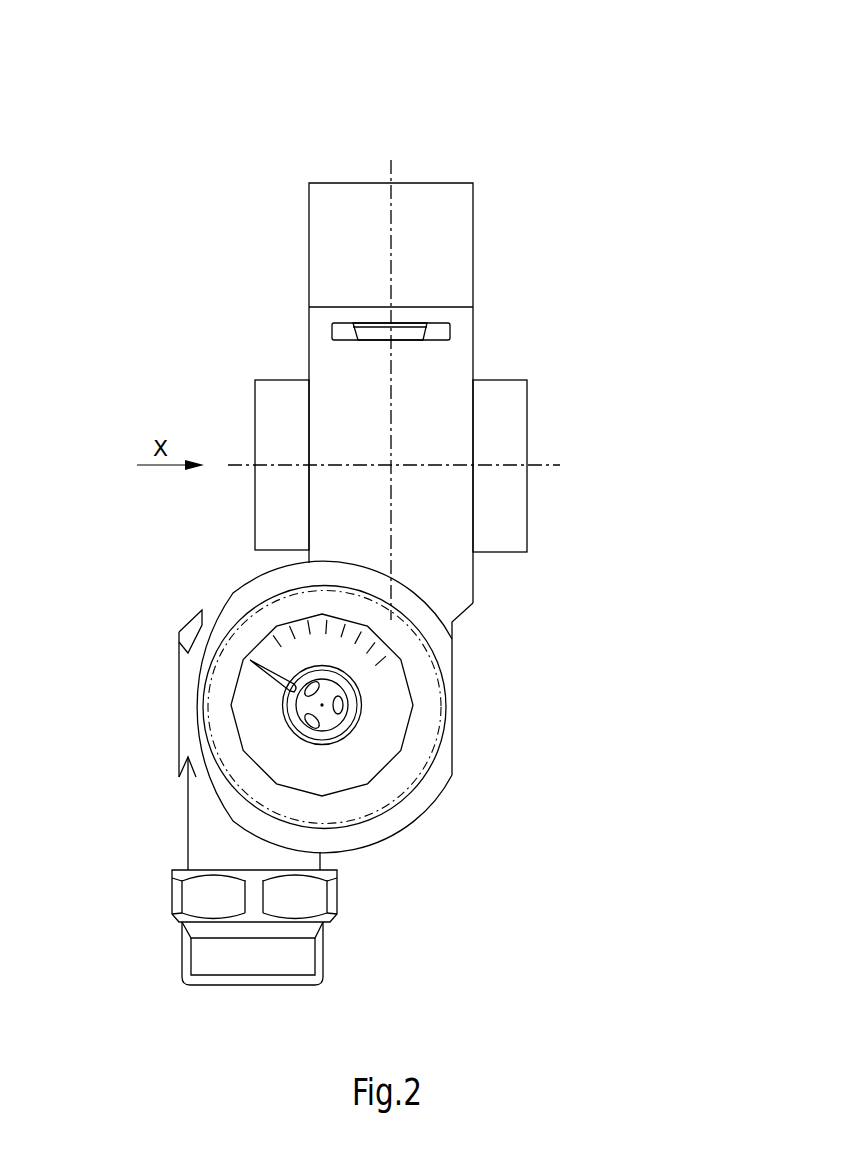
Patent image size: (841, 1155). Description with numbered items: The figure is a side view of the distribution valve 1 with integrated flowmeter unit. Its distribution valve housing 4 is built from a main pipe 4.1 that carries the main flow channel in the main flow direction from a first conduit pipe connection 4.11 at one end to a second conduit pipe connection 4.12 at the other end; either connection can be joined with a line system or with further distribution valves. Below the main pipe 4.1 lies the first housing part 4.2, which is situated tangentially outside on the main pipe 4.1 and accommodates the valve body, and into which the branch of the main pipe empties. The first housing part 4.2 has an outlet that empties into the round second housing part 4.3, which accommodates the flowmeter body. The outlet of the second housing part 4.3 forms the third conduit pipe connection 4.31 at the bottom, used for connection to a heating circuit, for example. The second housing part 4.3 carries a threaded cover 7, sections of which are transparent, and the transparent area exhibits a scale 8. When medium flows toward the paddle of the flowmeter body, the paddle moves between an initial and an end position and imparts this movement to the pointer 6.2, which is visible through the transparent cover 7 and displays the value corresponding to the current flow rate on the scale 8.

The distribution valve 1 is at (528, 150).
The distribution valve housing 4 is at (268, 338).
The main pipe 4.1 is at (502, 382).
The first conduit pipe connection 4.11 is at (248, 408).
The second conduit pipe connection 4.12 is at (532, 408).
The first housing part 4.2 is at (474, 579).
The second housing part 4.3 is at (455, 737).
The third conduit pipe connection 4.31 is at (222, 986).
The pointer 6.2 is at (282, 682).
The cover 7 is at (227, 732).
The scale 8 is at (370, 670).